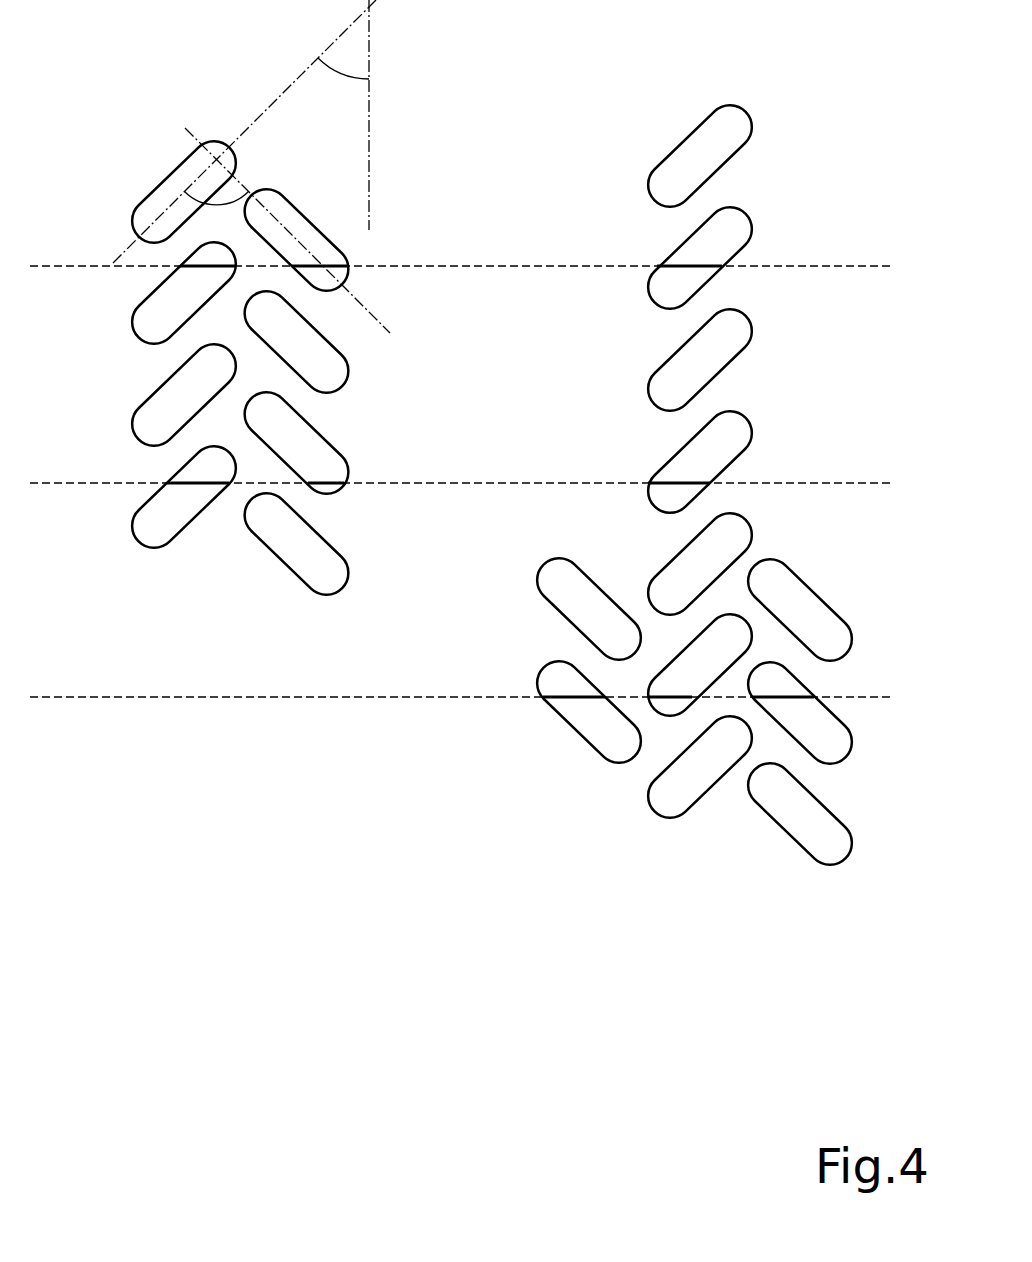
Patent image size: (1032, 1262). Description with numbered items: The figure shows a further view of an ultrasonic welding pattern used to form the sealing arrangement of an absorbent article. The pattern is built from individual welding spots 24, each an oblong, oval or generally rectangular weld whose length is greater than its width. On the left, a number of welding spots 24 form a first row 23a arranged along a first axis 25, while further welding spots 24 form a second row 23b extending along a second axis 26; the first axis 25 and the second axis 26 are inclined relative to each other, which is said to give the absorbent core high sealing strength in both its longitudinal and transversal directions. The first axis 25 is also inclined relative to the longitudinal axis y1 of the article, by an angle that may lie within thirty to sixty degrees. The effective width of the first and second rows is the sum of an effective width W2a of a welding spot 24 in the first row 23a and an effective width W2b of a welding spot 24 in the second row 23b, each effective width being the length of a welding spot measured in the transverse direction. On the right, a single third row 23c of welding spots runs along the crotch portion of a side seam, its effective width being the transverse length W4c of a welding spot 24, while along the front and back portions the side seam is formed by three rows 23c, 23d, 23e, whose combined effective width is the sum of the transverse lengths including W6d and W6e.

The first row 23a is at (188, 122).
The second row 23b is at (293, 193).
The third row 23c is at (663, 127).
The fourth row 23d is at (603, 867).
The fifth row 23e is at (768, 885).
The welding spot 24 is at (148, 537).
The first axis 25 is at (120, 250).
The second axis 26 is at (380, 325).
The longitudinal axis y1 is at (370, 148).
The effective width of a welding spot in the first row W2a is at (208, 268).
The effective width of a welding spot in the second row W2b is at (340, 258).
The effective width of the third row W4c is at (693, 265).
The transverse length of a welding spot in the fourth row W6d is at (570, 697).
The transverse length of a welding spot in the fifth row W6e is at (792, 697).